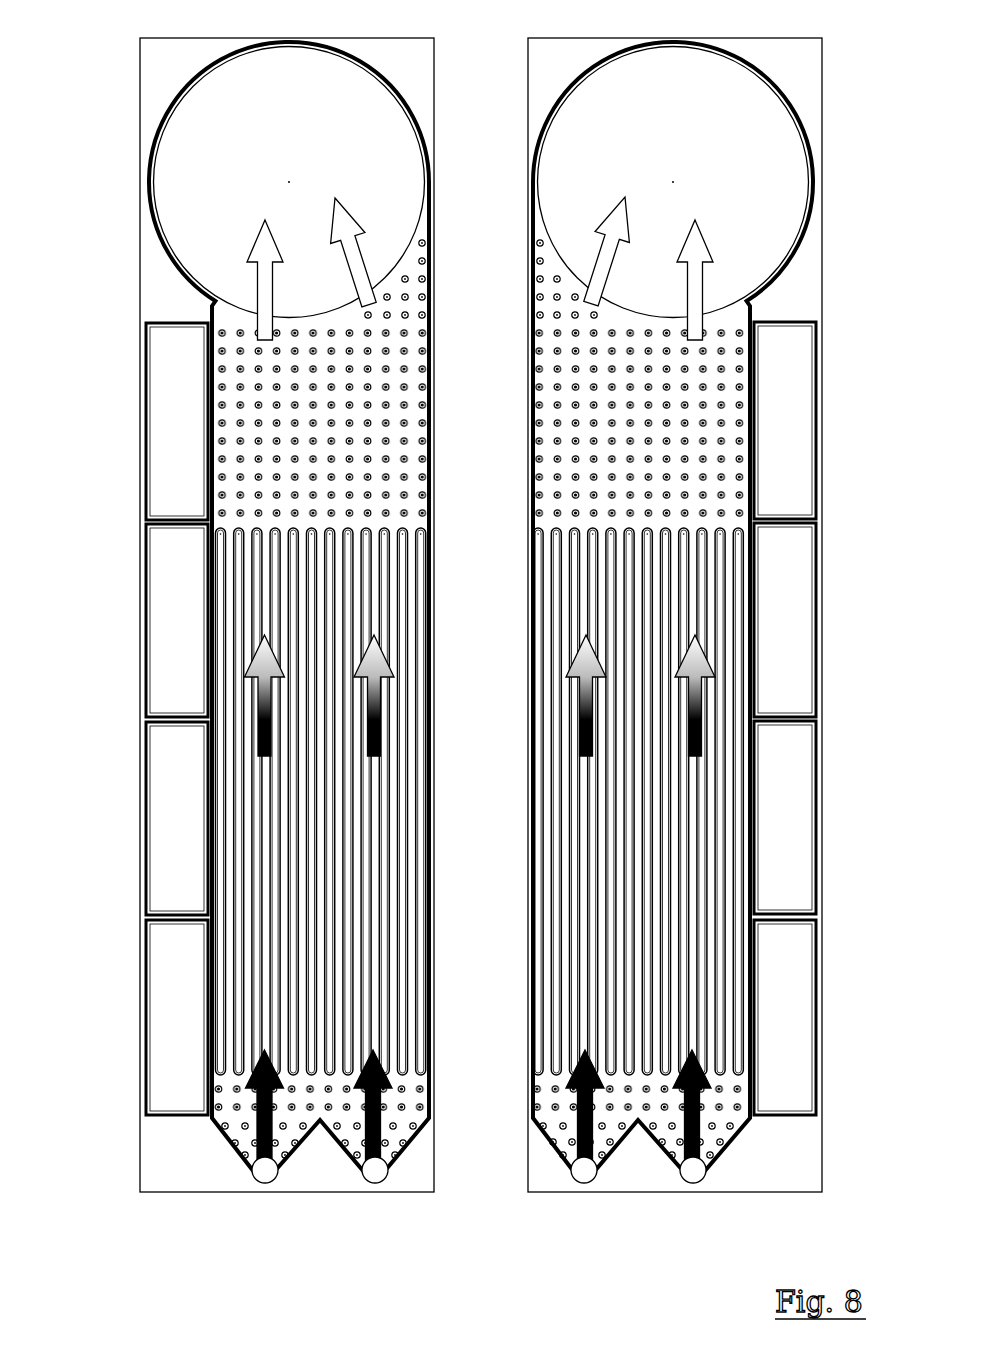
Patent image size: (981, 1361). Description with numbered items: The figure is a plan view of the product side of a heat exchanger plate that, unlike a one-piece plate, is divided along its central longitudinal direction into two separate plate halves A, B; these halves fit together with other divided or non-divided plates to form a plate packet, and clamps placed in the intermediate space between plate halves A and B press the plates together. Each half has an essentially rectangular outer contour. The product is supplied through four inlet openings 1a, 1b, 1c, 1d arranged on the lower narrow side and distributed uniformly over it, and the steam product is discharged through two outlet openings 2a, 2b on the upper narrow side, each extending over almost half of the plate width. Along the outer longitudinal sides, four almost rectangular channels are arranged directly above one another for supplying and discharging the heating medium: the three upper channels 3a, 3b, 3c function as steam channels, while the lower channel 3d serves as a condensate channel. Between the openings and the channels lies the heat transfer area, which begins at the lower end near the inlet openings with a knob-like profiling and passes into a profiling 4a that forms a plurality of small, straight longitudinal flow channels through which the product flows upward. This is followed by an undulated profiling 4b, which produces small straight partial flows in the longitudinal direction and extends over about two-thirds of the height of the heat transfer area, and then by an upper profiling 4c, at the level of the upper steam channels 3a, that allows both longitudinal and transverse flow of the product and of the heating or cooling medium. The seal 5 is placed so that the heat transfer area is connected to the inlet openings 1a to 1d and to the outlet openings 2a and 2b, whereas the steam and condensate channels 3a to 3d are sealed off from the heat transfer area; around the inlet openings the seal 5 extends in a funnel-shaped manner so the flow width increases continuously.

The plate half A is at (162, 67).
The plate half B is at (793, 65).
The inlet opening 1a is at (260, 1173).
The inlet opening 1b is at (372, 1173).
The inlet opening 1c is at (585, 1175).
The inlet opening 1d is at (690, 1175).
The outlet opening 2a is at (272, 173).
The outlet opening 2b is at (747, 140).
The steam channel 3a is at (185, 425).
The steam channel 3b is at (178, 622).
The steam channel 3c is at (187, 833).
The condensate channel 3d is at (170, 993).
The profiling 4a is at (562, 1108).
The undulated profiling 4b is at (630, 862).
The profiling 4c is at (602, 412).
The seal 5 is at (157, 247).